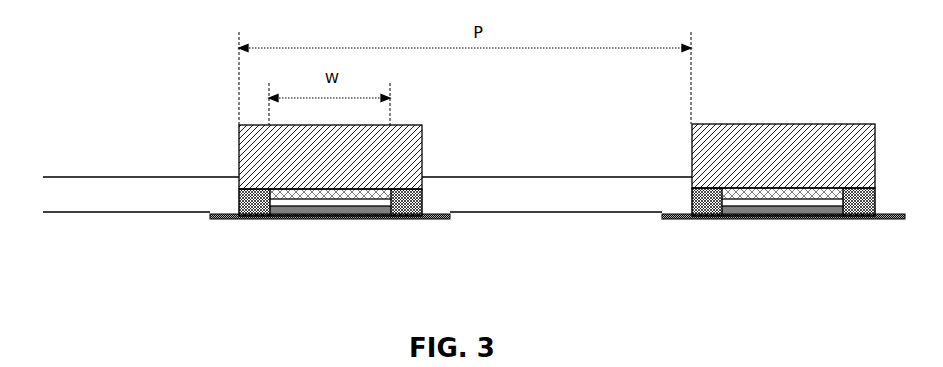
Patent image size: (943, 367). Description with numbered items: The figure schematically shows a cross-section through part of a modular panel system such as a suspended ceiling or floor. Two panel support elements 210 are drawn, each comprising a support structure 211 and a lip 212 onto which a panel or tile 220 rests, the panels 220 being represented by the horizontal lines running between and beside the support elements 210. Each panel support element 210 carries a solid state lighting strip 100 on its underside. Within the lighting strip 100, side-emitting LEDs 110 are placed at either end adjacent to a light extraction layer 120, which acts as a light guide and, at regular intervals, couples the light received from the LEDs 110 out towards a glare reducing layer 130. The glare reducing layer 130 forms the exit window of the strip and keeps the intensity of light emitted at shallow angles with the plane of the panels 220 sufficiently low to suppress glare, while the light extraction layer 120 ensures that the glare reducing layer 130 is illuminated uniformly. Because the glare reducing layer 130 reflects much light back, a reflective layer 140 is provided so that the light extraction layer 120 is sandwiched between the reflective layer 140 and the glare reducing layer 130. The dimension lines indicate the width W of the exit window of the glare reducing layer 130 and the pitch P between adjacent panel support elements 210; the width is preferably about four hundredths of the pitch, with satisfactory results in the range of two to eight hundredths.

The solid state lighting strip 100 is at (245, 219).
The side-emitting LEDs 110 is at (420, 218).
The light extraction layer 120 is at (330, 202).
The glare reducing layer 130 is at (372, 218).
The reflective layer 140 is at (282, 195).
The panel support element 210 is at (423, 143).
The support structure 211 is at (239, 153).
The lip 212 is at (670, 219).
The panels or tiles 220 is at (623, 192).